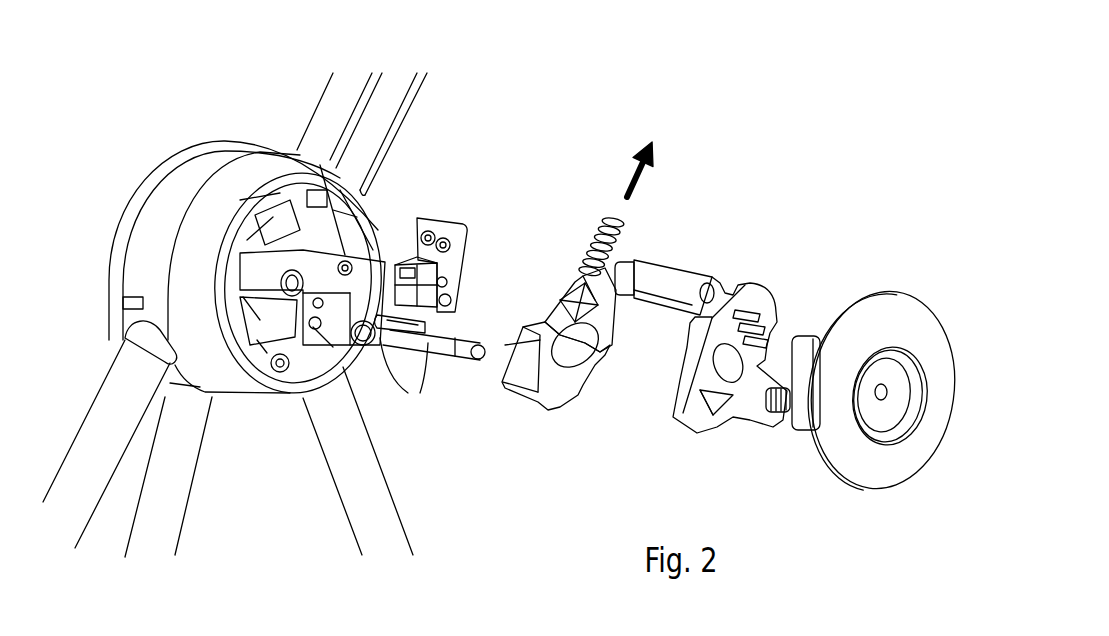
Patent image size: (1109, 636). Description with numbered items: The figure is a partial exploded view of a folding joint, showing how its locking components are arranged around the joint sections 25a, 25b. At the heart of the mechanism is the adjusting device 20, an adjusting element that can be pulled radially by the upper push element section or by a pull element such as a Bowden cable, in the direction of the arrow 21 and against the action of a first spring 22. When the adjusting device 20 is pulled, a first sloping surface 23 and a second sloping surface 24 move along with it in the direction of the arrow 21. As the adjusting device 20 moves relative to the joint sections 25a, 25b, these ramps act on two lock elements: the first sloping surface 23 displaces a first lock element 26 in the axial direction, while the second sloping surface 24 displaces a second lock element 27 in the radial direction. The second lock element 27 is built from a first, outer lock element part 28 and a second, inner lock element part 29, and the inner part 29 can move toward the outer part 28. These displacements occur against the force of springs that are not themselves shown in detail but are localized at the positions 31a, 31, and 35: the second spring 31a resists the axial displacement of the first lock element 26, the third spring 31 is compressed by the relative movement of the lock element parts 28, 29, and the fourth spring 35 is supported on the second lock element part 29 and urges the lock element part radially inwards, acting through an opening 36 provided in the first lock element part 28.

The adjusting device 20 is at (548, 415).
The arrow 21 is at (633, 180).
The first spring 22 is at (628, 213).
The first sloping surface 23 is at (610, 340).
The second sloping surface 24 is at (540, 320).
The joint section 25a is at (183, 177).
The joint section 25b is at (263, 173).
The first lock element 26 is at (677, 280).
The second lock element 27 is at (418, 371).
The first lock element part 28 is at (378, 255).
The second lock element part 29 is at (452, 217).
The third spring 31 is at (425, 223).
The second spring 31a is at (788, 413).
The fourth spring 35 is at (465, 237).
The opening 36 is at (312, 180).